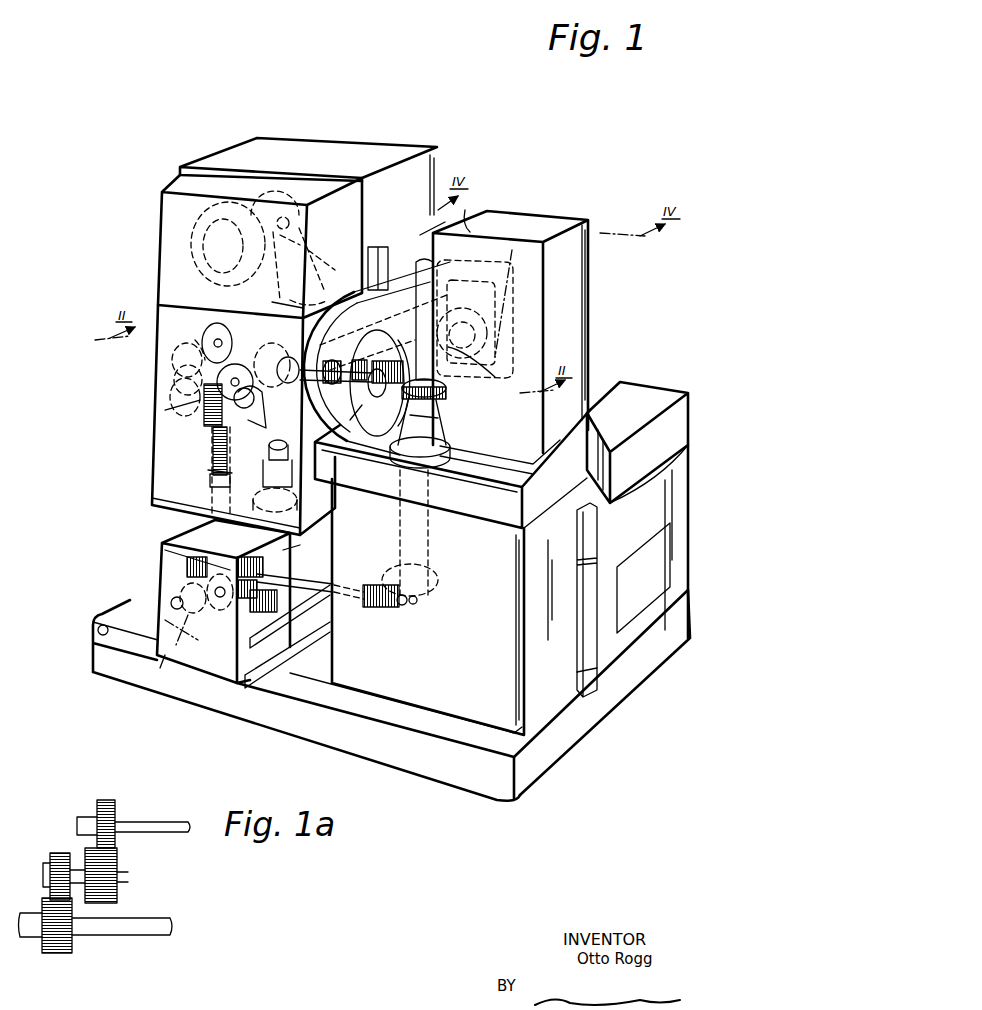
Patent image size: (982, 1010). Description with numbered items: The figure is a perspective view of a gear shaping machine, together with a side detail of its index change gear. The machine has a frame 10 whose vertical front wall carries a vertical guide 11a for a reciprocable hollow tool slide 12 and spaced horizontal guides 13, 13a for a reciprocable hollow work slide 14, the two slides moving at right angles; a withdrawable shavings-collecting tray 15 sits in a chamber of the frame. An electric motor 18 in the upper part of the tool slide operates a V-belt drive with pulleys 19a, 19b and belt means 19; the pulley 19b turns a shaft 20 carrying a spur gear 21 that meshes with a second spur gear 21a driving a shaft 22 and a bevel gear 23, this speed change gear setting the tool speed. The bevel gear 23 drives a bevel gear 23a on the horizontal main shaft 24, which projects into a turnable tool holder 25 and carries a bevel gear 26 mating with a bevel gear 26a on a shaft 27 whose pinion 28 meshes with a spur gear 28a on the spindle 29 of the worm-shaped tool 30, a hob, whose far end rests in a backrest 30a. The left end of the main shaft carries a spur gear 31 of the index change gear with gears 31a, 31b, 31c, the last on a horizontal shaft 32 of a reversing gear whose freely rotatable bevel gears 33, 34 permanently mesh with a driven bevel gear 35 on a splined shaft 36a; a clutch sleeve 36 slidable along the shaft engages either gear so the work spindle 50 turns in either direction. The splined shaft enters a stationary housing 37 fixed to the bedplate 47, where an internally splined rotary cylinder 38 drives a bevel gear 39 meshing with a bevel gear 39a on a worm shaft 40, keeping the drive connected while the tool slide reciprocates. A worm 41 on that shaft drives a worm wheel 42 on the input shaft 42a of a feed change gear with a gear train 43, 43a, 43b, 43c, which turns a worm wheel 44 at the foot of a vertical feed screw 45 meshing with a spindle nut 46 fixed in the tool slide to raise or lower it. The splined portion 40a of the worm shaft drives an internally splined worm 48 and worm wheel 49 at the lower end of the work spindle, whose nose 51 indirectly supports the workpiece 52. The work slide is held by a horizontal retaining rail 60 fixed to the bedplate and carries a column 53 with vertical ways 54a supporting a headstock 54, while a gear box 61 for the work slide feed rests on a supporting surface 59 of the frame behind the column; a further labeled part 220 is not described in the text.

In FIG. 1, the frame 10 is at (690, 513).
In FIG. 1, the vertical guide 11a is at (378, 245).
In FIG. 1, the tool slide 12 is at (165, 497).
In FIG. 1, the horizontal guide 13 is at (592, 535).
In FIG. 1, the horizontal guide 13a is at (594, 668).
In FIG. 1, the work slide 14 is at (580, 690).
In FIG. 1, the shavings-collecting pan or tray 15 is at (668, 556).
In FIG. 1, the electric motor 18 is at (210, 220).
In FIG. 1, the belt means 19 is at (322, 260).
In FIG. 1, the pulley 19a is at (300, 212).
In FIG. 1, the pulley 19b is at (332, 292).
In FIG. 1, the shaft 20 is at (278, 306).
In FIG. 1, the spur gear 21 is at (216, 333).
In FIG. 1, the second spur gear 21a is at (254, 403).
In FIG. 1, the shaft 22 is at (287, 383).
In FIG. 1, the bevel gear 23 is at (272, 356).
In FIG. 1, the bevel gear 23a is at (333, 362).
In FIG. 1, the main shaft 24 is at (352, 385).
In FIG. 1a, the main shaft 24 is at (153, 825).
In FIG. 1, the tool holder or carrier 25 is at (420, 283).
In FIG. 1, the bevel gear 26 is at (368, 345).
In FIG. 1, the bevel gear 26a is at (372, 362).
In FIG. 1, the shaft 27 is at (413, 345).
In FIG. 1, the pinion 28 is at (452, 308).
In FIG. 1, the spur gear 28a is at (485, 327).
In FIG. 1, the spindle 29 is at (496, 378).
In FIG. 1, the tool 30 is at (376, 408).
In FIG. 1, the backrest 30a is at (360, 410).
In FIG. 1, the spur gear 31 is at (200, 335).
In FIG. 1a, the spur gear 31 is at (106, 800).
In FIG. 1, the gear 31a is at (178, 350).
In FIG. 1a, the gear 31a is at (110, 866).
In FIG. 1, the gear 31b is at (180, 372).
In FIG. 1a, the gear 31b is at (58, 855).
In FIG. 1, the gear 31c is at (175, 390).
In FIG. 1a, the gear 31c is at (58, 952).
In FIG. 1, the horizontal shaft 32 is at (165, 410).
In FIG. 1a, the horizontal shaft 32 is at (144, 936).
In FIG. 1, the bevel gear 33 is at (210, 420).
In FIG. 1, the bevel gear 34 is at (262, 425).
In FIG. 1, the driven bevel gear 35 is at (213, 450).
In FIG. 1, the clutch sleeve 36 is at (226, 428).
In FIG. 1, the splined shaft 36a is at (215, 472).
In FIG. 1, the stationary housing 37 is at (175, 662).
In FIG. 1, the internally splined rotary cylinder 38 is at (210, 485).
In FIG. 1, the bevel gear 39 is at (200, 548).
In FIG. 1, the bevel gear 39a is at (175, 553).
In FIG. 1, the worm shaft 40 is at (330, 590).
In FIG. 1, the splined right-hand portion 40a is at (420, 606).
In FIG. 1, the worm 41 is at (255, 545).
In FIG. 1, the worm wheel 42 is at (260, 612).
In FIG. 1, the input shaft 42a is at (240, 600).
In FIG. 1, the gear 43 is at (225, 580).
In FIG. 1, the gear 43a is at (192, 570).
In FIG. 1, the gear 43b is at (172, 608).
In FIG. 1, the gear 43c is at (192, 634).
In FIG. 1, the worm wheel 44 is at (300, 636).
In FIG. 1, the vertical feed spindle or screw 45 is at (295, 540).
In FIG. 1, the spindle nut 46 is at (298, 492).
In FIG. 1, the bedplate 47 is at (212, 692).
In FIG. 1, the internally splined worm 48 is at (395, 610).
In FIG. 1, the worm wheel 49 is at (440, 588).
In FIG. 1, the work spindle 50 is at (432, 540).
In FIG. 1, the head or nose 51 is at (455, 446).
In FIG. 1, the workpiece 52 is at (448, 394).
In FIG. 1, the support or column 53 is at (565, 222).
In FIG. 1, the headstock 54 is at (432, 228).
In FIG. 1, the vertical ways 54a is at (470, 210).
In FIG. 1, the supporting surface 59 is at (670, 470).
In FIG. 1, the horizontal retaining rail 60 is at (355, 712).
In FIG. 1, the gear box 61 is at (630, 390).
In FIG. 1, the spindle cone 220 is at (442, 420).